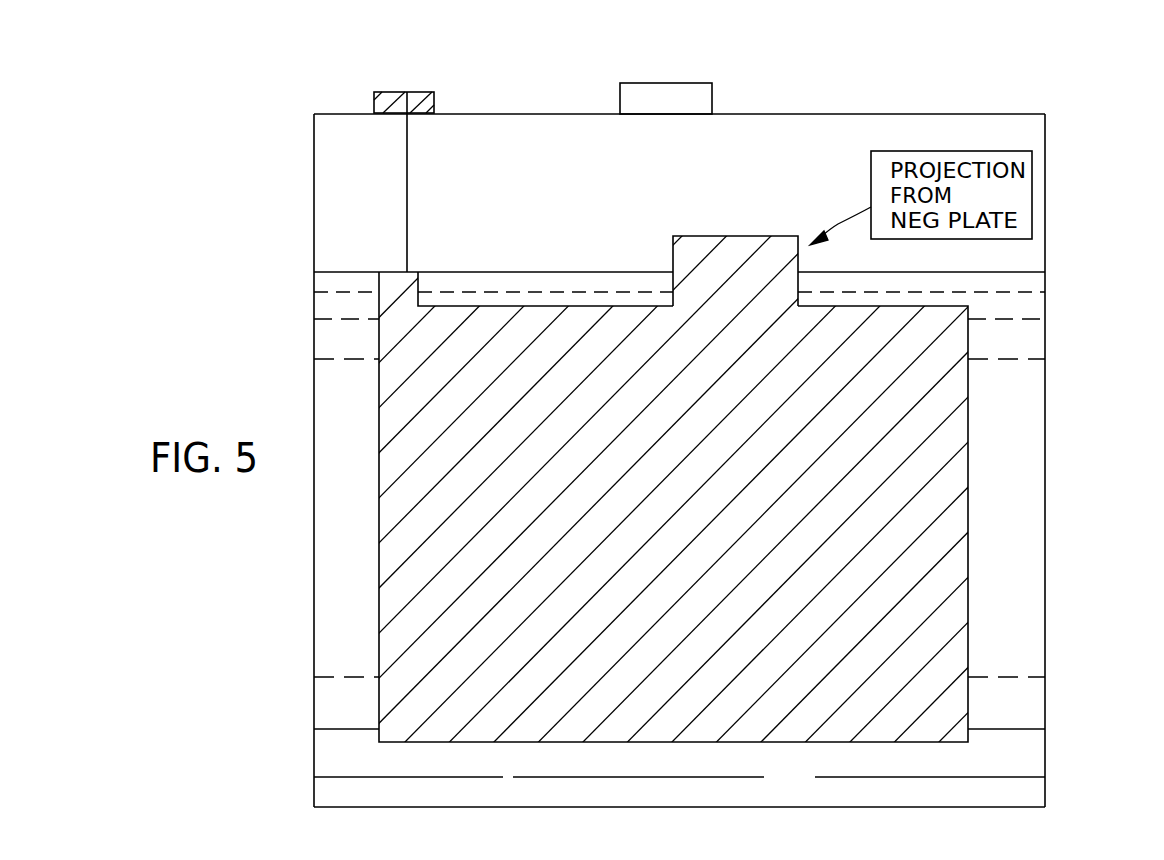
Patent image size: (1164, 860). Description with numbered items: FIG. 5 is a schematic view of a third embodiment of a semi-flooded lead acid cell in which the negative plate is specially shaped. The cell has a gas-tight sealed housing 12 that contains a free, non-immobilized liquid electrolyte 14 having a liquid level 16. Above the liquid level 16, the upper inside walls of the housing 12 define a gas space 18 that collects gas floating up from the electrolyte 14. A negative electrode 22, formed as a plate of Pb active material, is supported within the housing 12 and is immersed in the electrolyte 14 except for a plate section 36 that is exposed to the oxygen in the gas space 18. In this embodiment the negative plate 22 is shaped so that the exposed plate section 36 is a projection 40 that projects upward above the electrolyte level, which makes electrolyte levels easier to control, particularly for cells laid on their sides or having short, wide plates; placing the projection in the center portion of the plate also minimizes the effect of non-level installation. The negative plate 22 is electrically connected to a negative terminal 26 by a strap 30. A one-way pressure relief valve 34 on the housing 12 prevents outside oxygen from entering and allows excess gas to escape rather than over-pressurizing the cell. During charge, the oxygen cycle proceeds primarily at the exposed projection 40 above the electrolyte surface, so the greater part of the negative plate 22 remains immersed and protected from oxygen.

The sealed housing 12 is at (1045, 358).
The liquid electrolyte 14 is at (1010, 465).
The liquid level 16 is at (965, 272).
The gas space 18 is at (1022, 136).
The negative electrode 22 is at (970, 690).
The negative terminal 26 is at (434, 105).
The strap 30 is at (407, 238).
The one-way pressure relief valve 34 is at (665, 83).
The plate section 36 is at (673, 255).
The projection 40 is at (720, 236).